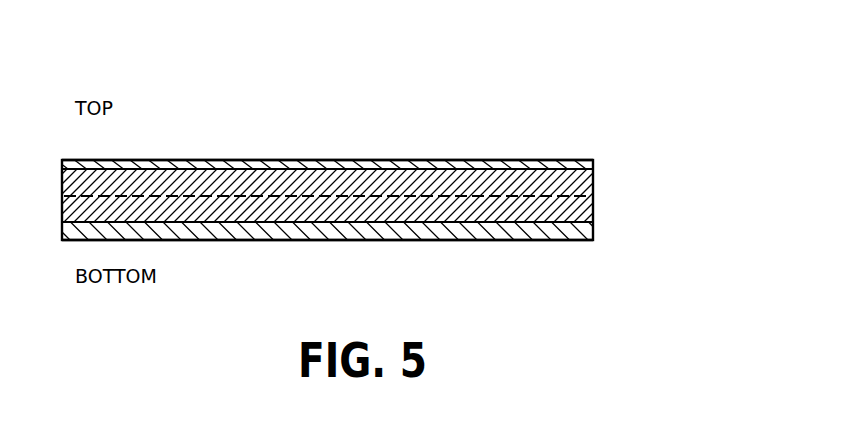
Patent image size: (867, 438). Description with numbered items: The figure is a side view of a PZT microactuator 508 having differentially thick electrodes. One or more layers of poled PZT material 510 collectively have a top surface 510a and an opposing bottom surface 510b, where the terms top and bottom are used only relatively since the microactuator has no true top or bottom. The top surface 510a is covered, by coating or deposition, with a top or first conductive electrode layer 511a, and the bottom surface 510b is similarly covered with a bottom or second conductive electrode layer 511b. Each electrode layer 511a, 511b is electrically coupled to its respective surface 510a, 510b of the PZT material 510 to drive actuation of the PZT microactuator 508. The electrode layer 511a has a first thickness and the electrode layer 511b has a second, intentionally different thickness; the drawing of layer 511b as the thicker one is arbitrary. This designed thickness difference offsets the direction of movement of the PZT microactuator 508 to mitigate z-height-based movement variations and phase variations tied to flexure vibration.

The PZT microactuator 508 is at (641, 61).
The poled PZT material 510 is at (593, 197).
The top surface 510a is at (338, 165).
The bottom surface 510b is at (405, 228).
The first conductive electrode layer 511a is at (587, 165).
The second conductive electrode layer 511b is at (587, 226).